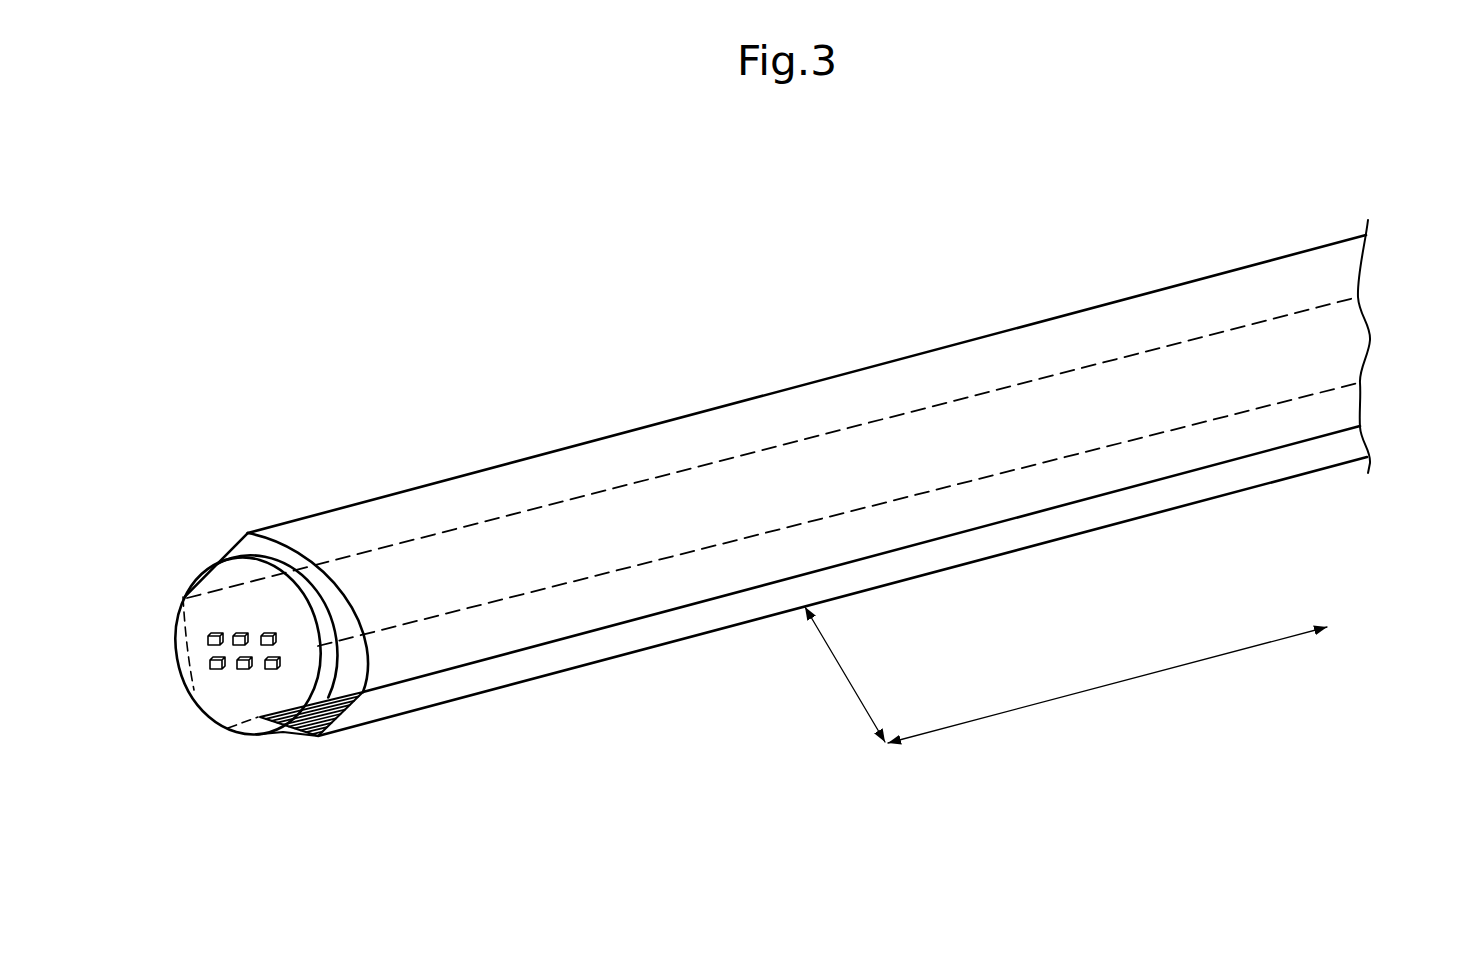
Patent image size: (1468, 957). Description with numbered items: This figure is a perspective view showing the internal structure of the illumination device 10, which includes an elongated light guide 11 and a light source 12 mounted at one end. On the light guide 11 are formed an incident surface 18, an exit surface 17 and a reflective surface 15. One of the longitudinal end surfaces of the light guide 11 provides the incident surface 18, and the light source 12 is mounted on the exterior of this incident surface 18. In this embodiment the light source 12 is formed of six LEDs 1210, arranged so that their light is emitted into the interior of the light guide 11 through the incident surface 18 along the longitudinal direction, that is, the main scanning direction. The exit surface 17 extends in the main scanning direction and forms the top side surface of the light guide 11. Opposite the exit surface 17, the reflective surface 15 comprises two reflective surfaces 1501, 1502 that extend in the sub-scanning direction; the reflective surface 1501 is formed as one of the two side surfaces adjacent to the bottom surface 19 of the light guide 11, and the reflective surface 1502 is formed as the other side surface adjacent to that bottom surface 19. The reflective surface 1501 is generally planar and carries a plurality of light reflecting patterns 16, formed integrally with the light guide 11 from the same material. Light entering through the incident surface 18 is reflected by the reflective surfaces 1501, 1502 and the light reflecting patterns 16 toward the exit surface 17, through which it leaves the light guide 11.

The illumination device 10 is at (775, 318).
The light guide 11 is at (942, 345).
The light source 12 is at (184, 599).
The reflective surface 15 is at (793, 614).
The light reflecting patterns 16 is at (373, 813).
The exit surface 17 is at (1055, 330).
The incident surface 18 is at (298, 555).
The bottom surface 19 is at (480, 643).
The LED 1210 is at (266, 669).
The reflective surface 1501 is at (282, 732).
The reflective surface 1502 is at (459, 547).